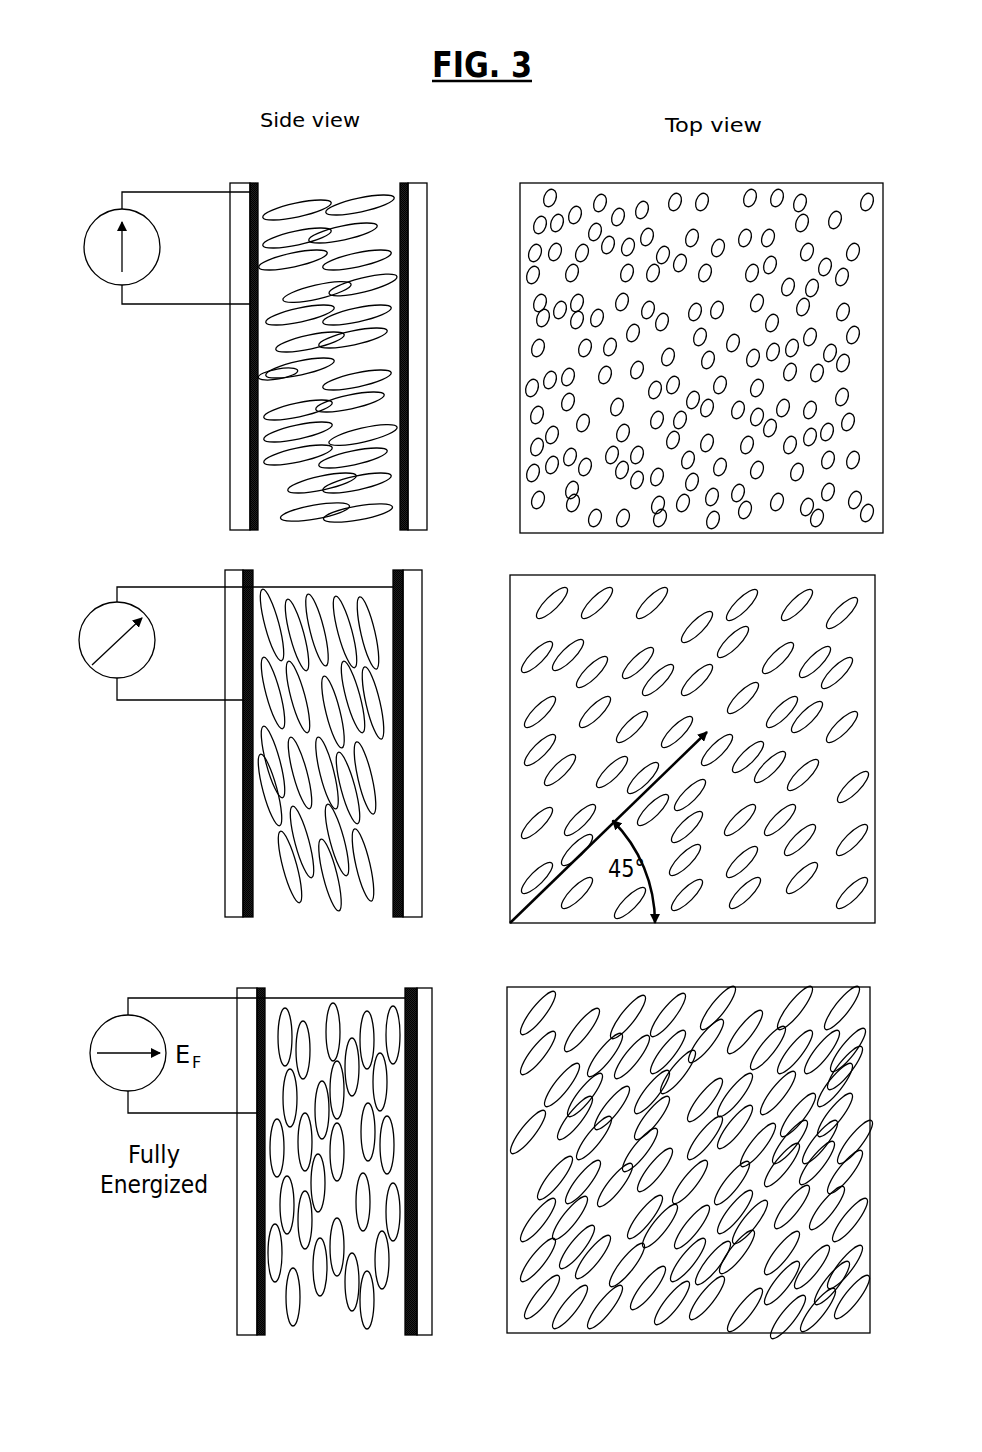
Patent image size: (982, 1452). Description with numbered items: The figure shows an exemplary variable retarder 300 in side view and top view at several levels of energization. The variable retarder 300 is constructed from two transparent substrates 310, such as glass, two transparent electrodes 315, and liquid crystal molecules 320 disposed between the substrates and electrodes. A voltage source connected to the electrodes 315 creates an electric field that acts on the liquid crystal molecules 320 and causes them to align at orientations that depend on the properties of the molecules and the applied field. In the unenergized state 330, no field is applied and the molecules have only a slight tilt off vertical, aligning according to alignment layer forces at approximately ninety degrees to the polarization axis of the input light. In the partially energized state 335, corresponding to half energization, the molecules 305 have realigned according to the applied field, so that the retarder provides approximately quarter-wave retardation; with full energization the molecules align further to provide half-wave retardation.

The variable retarder 300 is at (530, 162).
The liquid crystal molecules (partially energized) 305 is at (278, 897).
The transparent substrates 310 is at (232, 507).
The transparent electrodes 315 is at (398, 522).
The liquid crystal molecules 320 is at (620, 333).
The unenergized state 330 is at (474, 360).
The partially energized state 335 is at (250, 764).